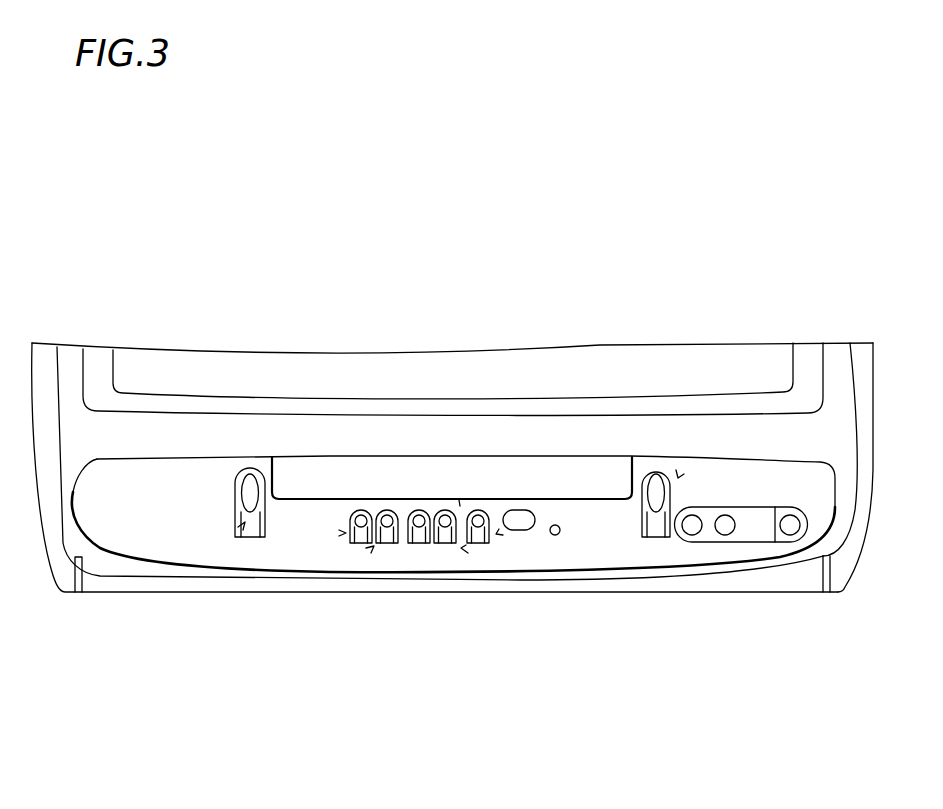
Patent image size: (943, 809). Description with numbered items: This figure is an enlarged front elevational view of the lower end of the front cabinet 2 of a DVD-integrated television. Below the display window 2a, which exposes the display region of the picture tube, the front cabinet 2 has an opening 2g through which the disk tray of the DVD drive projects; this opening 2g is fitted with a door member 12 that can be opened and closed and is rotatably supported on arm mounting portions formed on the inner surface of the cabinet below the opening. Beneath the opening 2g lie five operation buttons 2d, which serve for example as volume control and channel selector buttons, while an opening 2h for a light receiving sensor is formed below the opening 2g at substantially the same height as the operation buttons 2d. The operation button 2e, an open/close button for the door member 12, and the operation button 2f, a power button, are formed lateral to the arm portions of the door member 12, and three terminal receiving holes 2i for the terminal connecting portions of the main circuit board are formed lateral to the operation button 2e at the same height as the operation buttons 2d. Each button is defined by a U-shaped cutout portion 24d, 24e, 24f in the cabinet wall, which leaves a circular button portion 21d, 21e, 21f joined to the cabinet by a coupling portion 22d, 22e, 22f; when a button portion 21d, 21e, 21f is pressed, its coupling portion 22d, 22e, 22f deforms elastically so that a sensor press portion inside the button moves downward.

The front cabinet 2 is at (76, 347).
The display window 2a is at (115, 367).
The operation buttons 2d is at (460, 500).
The operation button 2e is at (678, 477).
The operation button 2f is at (244, 523).
The opening 2g is at (615, 466).
The opening 2h is at (537, 523).
The terminal receiving holes 2i is at (692, 515).
The door member 12 is at (585, 487).
The button portions 21d is at (386, 509).
The button portion 21e is at (656, 486).
The button portion 21f is at (250, 486).
The coupling portions 22d is at (360, 544).
The coupling portion 22e is at (657, 538).
The coupling portion 22f is at (252, 538).
The U-shaped cutout portions 24d is at (360, 514).
The U-shaped cutout portion 24e is at (655, 490).
The U-shaped cutout portion 24f is at (246, 480).